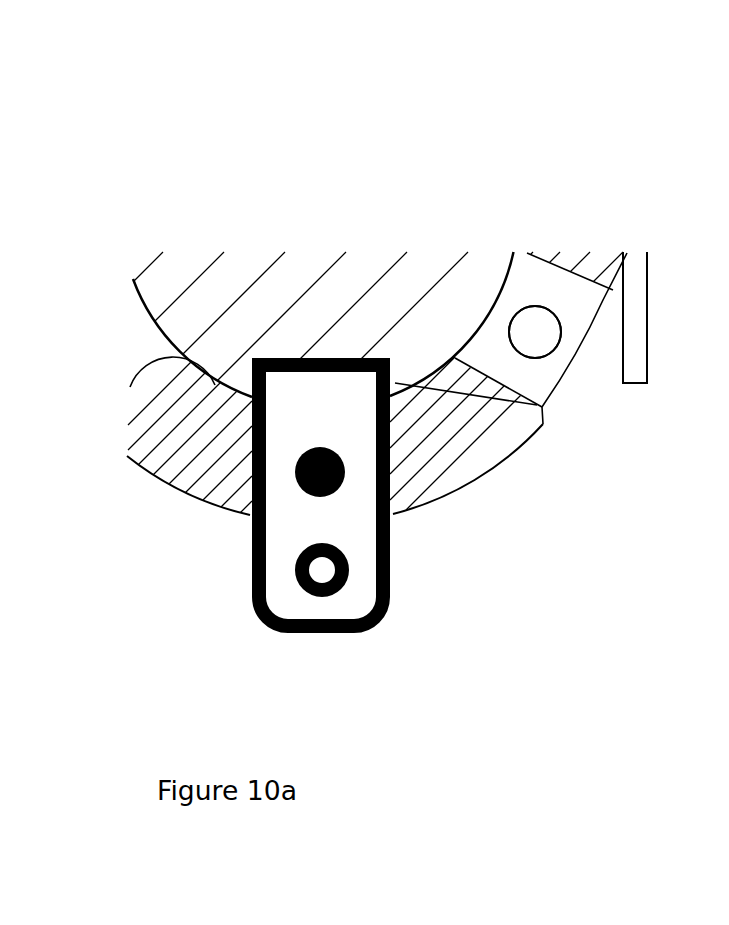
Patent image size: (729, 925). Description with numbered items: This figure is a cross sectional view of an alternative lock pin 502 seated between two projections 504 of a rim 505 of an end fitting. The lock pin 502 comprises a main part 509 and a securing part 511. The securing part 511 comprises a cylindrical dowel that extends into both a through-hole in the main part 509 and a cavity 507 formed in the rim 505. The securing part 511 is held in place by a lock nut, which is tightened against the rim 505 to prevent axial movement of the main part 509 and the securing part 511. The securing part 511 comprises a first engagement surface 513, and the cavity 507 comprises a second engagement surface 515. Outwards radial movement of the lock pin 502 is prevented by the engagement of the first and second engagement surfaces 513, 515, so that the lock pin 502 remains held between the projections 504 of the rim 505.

The lock pin 502 is at (343, 647).
The projections 504 is at (450, 430).
The rim 505 is at (527, 285).
The cavity 507 is at (535, 328).
The main part 509 is at (352, 400).
The securing part 511 is at (320, 467).
The first engagement surface 513 is at (313, 490).
The second engagement surface 515 is at (557, 347).